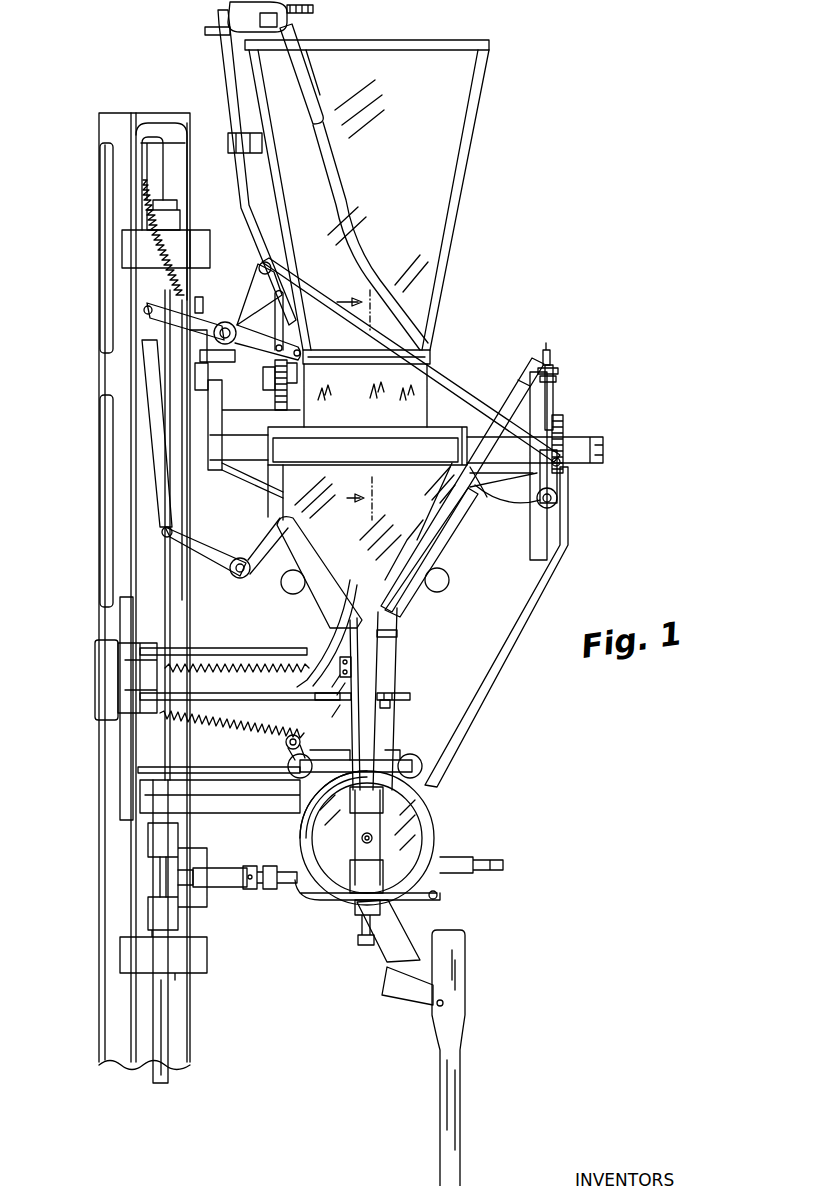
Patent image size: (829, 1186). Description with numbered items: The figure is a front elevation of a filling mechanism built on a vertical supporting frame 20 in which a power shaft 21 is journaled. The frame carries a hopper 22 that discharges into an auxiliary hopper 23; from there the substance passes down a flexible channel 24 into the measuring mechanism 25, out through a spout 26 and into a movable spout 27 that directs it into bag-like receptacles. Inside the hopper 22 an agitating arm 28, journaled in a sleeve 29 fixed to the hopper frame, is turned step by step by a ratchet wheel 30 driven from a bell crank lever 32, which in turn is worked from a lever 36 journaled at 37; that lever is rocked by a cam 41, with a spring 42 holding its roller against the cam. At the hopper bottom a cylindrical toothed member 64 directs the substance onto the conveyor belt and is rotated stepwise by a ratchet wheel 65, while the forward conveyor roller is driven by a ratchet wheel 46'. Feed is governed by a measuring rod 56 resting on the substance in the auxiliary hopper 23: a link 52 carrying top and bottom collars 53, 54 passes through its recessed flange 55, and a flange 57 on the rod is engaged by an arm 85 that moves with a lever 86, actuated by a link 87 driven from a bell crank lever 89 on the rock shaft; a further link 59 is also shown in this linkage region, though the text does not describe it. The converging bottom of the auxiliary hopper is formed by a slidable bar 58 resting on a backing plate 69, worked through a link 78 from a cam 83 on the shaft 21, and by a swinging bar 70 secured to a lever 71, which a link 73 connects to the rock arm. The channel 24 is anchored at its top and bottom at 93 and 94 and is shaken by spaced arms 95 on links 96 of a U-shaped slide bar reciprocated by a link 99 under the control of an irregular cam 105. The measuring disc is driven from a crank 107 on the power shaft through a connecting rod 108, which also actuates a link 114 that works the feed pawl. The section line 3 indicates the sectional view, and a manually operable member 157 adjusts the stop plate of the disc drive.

The section line 3 is at (354, 400).
The supporting frame 20 is at (105, 798).
The power shaft 21 is at (158, 1077).
The hopper 22 is at (432, 158).
The auxiliary hopper 23 is at (390, 527).
The flexible channel 24 is at (370, 672).
The measuring mechanism 25 is at (410, 825).
The spout 26 is at (393, 940).
The movable spout 27 is at (450, 1030).
The agitating arm 28 is at (320, 240).
The sleeve 29 is at (313, 90).
The ratchet wheel 30 is at (335, 18).
The bell crank lever 32 is at (222, 77).
The lever 36 is at (230, 353).
The journal 37 is at (215, 340).
The cam 41 is at (203, 302).
The spring 42 is at (163, 247).
The ratchet wheel 46' is at (420, 466).
The link 52 is at (555, 400).
The top collar 53 is at (553, 360).
The bottom collar 54 is at (556, 378).
The recessed flange 55 is at (558, 372).
The measuring rod 56 is at (513, 413).
The flange 57 is at (488, 495).
The slidable bar 58 is at (403, 583).
The link 59 is at (430, 388).
The cylindrical toothed member 64 is at (367, 367).
The ratchet wheel 65 is at (275, 393).
The backing plate 69 is at (430, 563).
The swinging bar 70 is at (333, 593).
The lever 71 is at (195, 548).
The link 73 is at (158, 440).
The link 78 is at (253, 648).
The cam 83 is at (190, 650).
The arm 85 is at (525, 500).
The lever 86 is at (553, 477).
The link 87 is at (400, 393).
The bell crank lever 89 is at (245, 300).
The top anchor 93 is at (397, 634).
The bottom anchor 94 is at (397, 755).
The spaced arms 95 is at (390, 702).
The links 96 is at (397, 697).
The link 99 is at (290, 695).
The cam 105 is at (207, 695).
The crank 107 is at (205, 908).
The connecting rod 108 is at (258, 887).
The link 114 is at (430, 890).
The manually operable member 157 is at (365, 948).